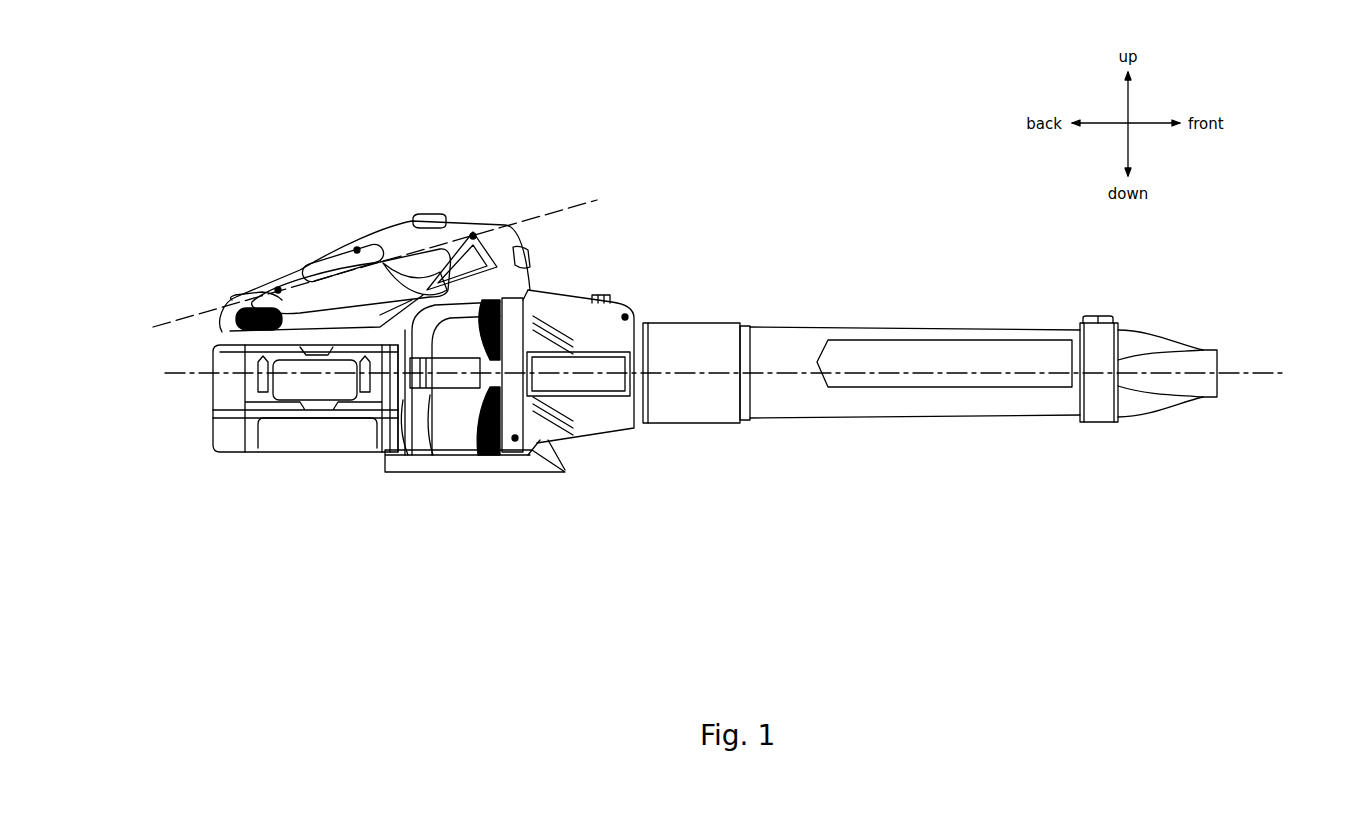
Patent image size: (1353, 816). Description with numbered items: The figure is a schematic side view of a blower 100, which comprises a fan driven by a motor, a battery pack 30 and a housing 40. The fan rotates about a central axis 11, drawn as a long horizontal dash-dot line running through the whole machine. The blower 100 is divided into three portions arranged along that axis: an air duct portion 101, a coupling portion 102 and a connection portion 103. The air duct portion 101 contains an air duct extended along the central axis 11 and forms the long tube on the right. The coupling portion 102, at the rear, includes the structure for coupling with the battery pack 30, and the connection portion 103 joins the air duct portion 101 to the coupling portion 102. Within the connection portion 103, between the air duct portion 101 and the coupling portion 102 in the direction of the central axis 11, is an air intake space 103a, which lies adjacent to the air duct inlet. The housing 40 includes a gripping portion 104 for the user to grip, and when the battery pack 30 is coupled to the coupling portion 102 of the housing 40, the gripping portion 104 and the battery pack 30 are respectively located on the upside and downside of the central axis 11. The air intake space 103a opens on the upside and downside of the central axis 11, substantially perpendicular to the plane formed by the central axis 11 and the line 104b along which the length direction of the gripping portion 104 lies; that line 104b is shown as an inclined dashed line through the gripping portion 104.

The blower 100 is at (651, 121).
The gripping portion 104 is at (372, 248).
The line 104b is at (566, 205).
The coupling portion 102 is at (224, 330).
The housing 40 is at (683, 230).
The air duct portion 101 is at (709, 340).
The central axis 11 is at (1274, 371).
The battery pack 30 is at (250, 450).
The connection portion 103 is at (452, 378).
The air intake space 103a is at (465, 427).